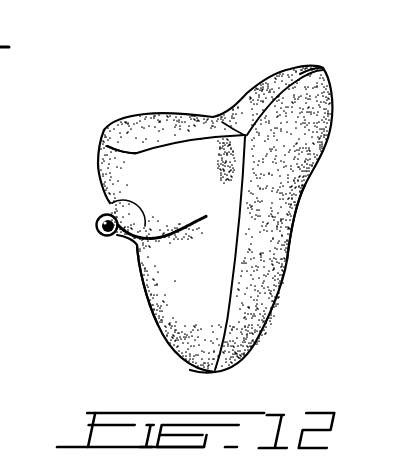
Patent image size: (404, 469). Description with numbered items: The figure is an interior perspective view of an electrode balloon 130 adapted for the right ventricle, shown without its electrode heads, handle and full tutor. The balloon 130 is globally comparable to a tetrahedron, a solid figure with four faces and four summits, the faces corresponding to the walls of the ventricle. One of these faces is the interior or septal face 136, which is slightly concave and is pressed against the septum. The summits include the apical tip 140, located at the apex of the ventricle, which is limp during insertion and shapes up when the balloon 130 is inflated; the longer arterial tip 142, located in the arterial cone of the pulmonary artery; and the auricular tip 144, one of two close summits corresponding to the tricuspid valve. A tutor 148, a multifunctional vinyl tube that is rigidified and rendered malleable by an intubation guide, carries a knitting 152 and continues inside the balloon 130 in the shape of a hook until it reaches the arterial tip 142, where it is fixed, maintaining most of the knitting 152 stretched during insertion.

The electrode balloon 130 is at (222, 97).
The apical tip 140 is at (324, 70).
The auricular tip 144 is at (123, 163).
The tutor 148 is at (96, 230).
The interior or septal face 136 is at (262, 227).
The knitting 152 is at (148, 289).
The arterial tip 142 is at (207, 372).